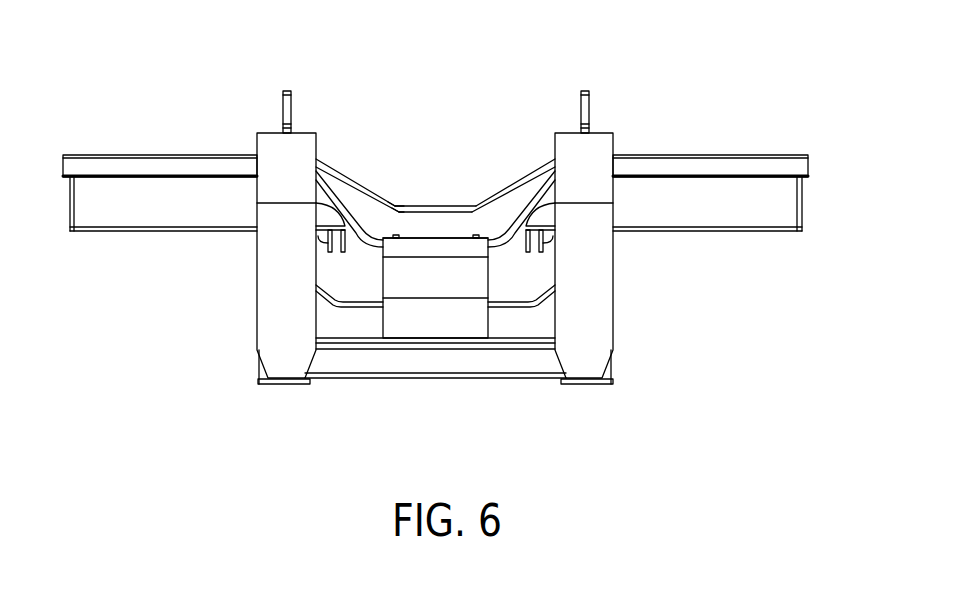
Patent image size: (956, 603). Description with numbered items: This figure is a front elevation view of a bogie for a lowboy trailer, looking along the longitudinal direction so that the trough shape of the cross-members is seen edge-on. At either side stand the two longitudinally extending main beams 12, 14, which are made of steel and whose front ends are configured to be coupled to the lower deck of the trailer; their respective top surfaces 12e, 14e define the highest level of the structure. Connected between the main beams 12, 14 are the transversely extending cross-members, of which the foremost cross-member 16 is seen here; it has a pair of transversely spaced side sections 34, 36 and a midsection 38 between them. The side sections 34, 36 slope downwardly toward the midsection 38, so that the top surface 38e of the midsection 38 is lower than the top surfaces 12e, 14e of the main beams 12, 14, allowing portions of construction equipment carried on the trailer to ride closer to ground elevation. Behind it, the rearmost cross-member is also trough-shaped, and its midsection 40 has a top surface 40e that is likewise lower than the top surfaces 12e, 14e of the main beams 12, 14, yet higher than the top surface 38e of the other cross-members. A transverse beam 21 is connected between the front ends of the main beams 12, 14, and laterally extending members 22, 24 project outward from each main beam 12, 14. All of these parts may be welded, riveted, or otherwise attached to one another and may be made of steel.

The main beam 12 is at (257, 316).
The top surface of main beam 12e is at (262, 128).
The main beam 14 is at (605, 292).
The top surface of main beam 14e is at (603, 128).
The foremost cross-member 16 is at (536, 286).
The transverse beam 21 is at (441, 362).
The first lateral beam 22 is at (143, 172).
The second lateral beam 24 is at (698, 165).
The side section 34 is at (333, 198).
The side section 36 is at (545, 190).
The midsection 38 is at (376, 283).
The top surface of midsection 38e is at (448, 236).
The midsection of rearmost cross-member 40 is at (398, 207).
The top surface of midsection 40e is at (425, 201).